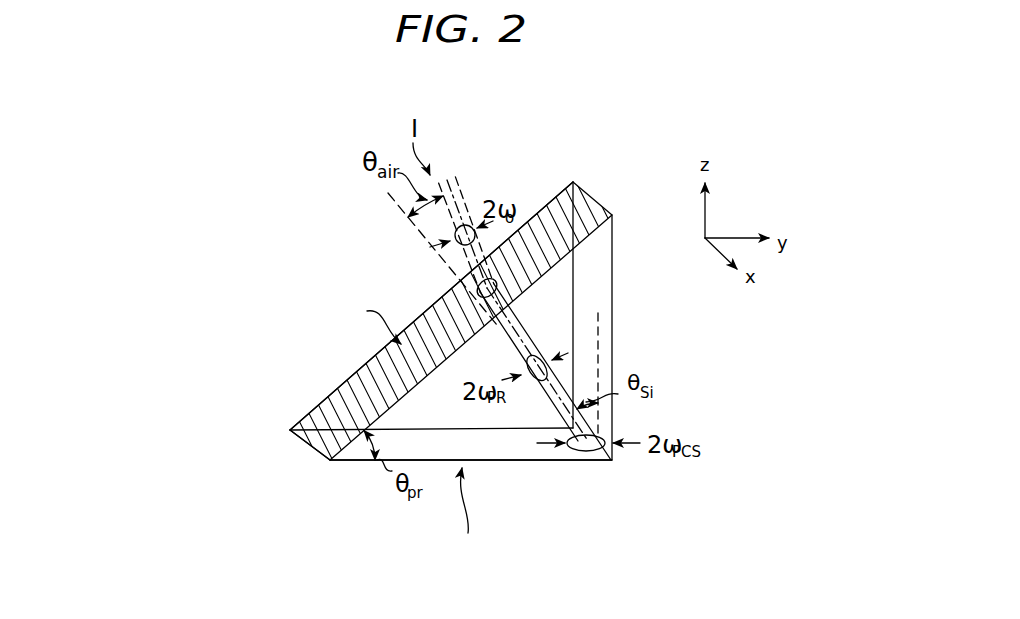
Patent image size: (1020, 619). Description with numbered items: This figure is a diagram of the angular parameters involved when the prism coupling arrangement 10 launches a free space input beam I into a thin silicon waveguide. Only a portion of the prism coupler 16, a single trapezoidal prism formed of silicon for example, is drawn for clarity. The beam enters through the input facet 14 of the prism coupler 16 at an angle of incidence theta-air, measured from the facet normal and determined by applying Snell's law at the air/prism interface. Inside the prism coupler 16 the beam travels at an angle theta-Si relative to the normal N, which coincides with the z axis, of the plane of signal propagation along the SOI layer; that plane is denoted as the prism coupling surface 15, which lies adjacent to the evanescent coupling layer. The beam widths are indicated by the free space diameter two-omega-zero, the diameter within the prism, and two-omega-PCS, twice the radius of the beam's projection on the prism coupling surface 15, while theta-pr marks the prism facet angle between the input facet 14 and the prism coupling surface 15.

The prism coupling arrangement 10 is at (511, 360).
The input facet 14 is at (557, 208).
The prism coupling surface 15 is at (528, 454).
The prism coupler 16 is at (325, 446).